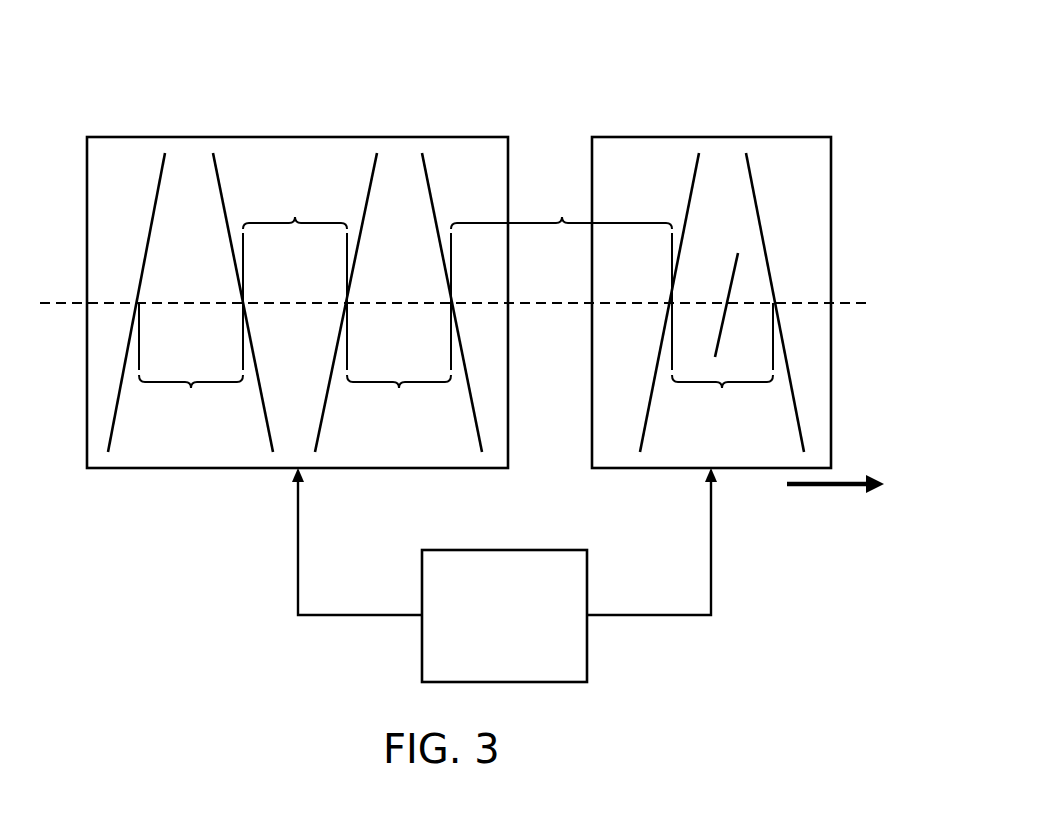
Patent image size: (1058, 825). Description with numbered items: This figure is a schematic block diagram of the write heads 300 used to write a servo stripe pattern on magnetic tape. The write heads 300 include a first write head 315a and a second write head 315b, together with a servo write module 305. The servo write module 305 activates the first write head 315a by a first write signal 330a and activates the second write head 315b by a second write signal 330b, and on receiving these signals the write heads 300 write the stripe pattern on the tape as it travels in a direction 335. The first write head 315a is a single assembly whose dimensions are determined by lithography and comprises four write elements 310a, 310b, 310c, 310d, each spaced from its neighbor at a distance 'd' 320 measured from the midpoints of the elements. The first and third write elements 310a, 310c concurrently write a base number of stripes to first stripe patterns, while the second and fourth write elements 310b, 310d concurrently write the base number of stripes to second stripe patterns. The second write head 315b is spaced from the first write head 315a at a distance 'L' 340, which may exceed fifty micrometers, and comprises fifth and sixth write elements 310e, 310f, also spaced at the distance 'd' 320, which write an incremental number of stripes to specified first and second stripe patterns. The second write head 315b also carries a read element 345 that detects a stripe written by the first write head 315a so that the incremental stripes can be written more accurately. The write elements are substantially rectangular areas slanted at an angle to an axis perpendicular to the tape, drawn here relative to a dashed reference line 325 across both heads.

The write heads 300 is at (86, 56).
The servo write module 305 is at (487, 653).
The first write element 310a is at (424, 160).
The second write element 310b is at (375, 162).
The third write element 310c is at (215, 162).
The fourth write element 310d is at (163, 163).
The fifth write element 310e is at (748, 164).
The sixth write element 310f is at (697, 164).
The first write head 315a is at (87, 192).
The second write head 315b is at (823, 137).
The distance 'd' 320 is at (456, 301).
The reference centerline 325 is at (75, 302).
The first write signal 330a is at (298, 530).
The second write signal 330b is at (711, 556).
The direction 335 is at (820, 487).
The distance 'L' 340 is at (561, 232).
The read element 345 is at (727, 300).